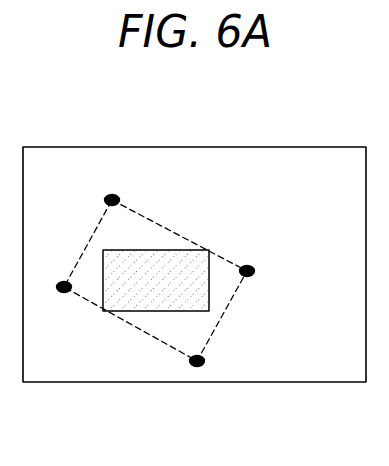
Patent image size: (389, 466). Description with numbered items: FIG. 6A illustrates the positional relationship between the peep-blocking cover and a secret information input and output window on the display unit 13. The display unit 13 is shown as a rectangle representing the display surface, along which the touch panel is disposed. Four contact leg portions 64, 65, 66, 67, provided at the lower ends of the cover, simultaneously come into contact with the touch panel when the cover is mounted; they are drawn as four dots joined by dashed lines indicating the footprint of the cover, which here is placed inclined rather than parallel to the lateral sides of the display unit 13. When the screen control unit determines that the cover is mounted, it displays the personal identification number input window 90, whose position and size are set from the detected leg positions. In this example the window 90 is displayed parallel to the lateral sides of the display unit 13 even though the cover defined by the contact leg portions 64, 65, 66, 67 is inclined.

The display unit 13 is at (97, 145).
The personal identification number input window 90 is at (143, 295).
The contact leg portion 64 is at (193, 367).
The contact leg portion 65 is at (254, 272).
The contact leg portion 66 is at (59, 292).
The contact leg portion 67 is at (115, 194).